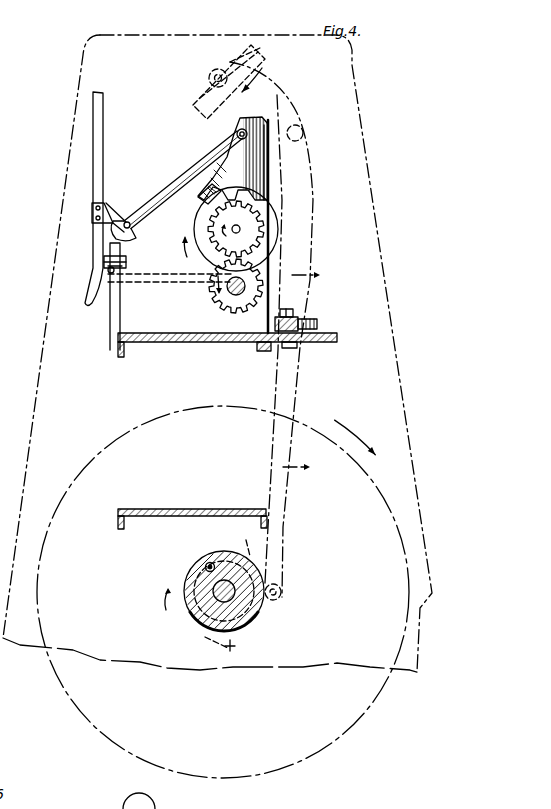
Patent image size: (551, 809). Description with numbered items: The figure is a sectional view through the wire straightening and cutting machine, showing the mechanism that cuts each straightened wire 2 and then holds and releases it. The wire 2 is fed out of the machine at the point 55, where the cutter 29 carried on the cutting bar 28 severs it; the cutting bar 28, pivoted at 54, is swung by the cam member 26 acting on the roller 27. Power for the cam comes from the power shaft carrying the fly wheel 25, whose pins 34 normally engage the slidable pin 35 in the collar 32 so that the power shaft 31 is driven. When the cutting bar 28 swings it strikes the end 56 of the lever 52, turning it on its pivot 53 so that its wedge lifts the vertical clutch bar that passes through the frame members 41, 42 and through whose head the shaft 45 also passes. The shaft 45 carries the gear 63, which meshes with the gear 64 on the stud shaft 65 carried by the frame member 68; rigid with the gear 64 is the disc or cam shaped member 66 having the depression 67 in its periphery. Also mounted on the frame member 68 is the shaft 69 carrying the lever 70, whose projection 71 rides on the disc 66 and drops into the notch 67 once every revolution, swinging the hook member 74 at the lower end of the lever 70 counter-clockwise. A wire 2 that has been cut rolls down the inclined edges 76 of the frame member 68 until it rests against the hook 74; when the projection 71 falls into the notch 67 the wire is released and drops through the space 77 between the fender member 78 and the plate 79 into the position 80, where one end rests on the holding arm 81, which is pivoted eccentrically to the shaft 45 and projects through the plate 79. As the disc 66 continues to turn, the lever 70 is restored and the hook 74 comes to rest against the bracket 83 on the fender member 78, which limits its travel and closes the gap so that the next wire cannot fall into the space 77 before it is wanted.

The straightened wire 2 is at (128, 222).
The fly wheel 25 is at (358, 716).
The cam member 26 is at (235, 646).
The roller 27 is at (282, 592).
The cutting bar 28 is at (302, 378).
The cutter 29 is at (240, 53).
The power shaft 31 is at (192, 598).
The collar 32 is at (198, 574).
The pins 34 is at (246, 545).
The slidable pin 35 is at (207, 563).
The frame member 41 is at (156, 509).
The frame member 42 is at (152, 343).
The shaft 45 is at (230, 293).
The lever 52 is at (298, 318).
The pivot 53 is at (286, 309).
The pivot 54 is at (303, 130).
The cutting point 55 is at (209, 73).
The lever end 56 is at (317, 322).
The gear 63 is at (236, 311).
The gear 64 is at (208, 228).
The stud shaft 65 is at (240, 229).
The disc or cam shaped member 66 is at (196, 260).
The depression 67 is at (241, 190).
The frame member 68 is at (176, 307).
The shaft 69 is at (242, 128).
The lever 70 is at (208, 154).
The projection 71 is at (204, 201).
The hook member 74 is at (125, 224).
The edges 76 is at (180, 182).
The space 77 is at (106, 270).
The fender member 78 is at (99, 188).
The member 79 is at (137, 322).
The wire position 80 is at (118, 263).
The holding arm 81 is at (136, 273).
The bracket 83 is at (122, 208).